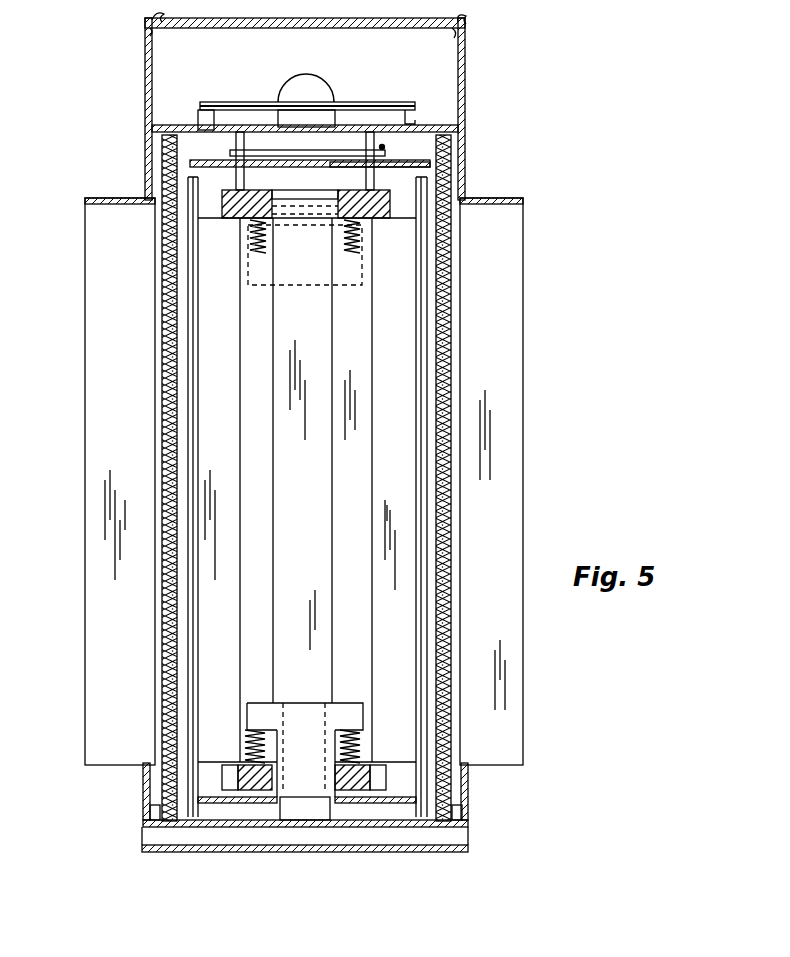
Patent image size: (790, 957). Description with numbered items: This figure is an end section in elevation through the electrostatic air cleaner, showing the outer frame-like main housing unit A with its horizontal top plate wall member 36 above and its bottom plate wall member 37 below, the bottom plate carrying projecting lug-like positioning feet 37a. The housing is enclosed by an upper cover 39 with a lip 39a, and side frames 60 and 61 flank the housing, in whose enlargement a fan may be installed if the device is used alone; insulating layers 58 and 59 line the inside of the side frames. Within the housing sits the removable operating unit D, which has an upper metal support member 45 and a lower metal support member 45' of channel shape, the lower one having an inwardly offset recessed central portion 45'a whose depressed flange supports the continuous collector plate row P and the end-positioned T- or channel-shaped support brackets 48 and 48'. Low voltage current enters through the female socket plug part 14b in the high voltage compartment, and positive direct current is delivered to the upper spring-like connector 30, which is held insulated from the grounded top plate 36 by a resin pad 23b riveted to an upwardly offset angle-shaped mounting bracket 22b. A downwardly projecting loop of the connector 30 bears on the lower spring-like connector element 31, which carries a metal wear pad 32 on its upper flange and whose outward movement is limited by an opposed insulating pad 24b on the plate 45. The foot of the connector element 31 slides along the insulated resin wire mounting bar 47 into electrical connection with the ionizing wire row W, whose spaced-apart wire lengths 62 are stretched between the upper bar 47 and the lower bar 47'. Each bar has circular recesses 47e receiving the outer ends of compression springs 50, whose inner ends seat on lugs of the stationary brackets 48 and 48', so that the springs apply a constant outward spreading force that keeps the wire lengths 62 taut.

The upper housing cover 39 is at (280, 36).
The cover lip 39a is at (455, 12).
The top plate wall member 36 is at (442, 128).
The female or socket plug part 14b is at (332, 68).
The mounting bracket 22b is at (346, 107).
The first spring-like connector 30 is at (262, 128).
The insulating or resin pad 23b is at (413, 124).
The top plate member / upper metal support member 45 is at (309, 150).
The insulating or resin pad 24b is at (397, 158).
The metal wear pad 32 is at (382, 147).
The second spring-like connector element 31 is at (240, 180).
The wire row mounting bar member 47 is at (307, 222).
The support bracket 48 is at (308, 264).
The compression spring 50 is at (362, 240).
The side frame 60 is at (84, 214).
The side frame 61 is at (523, 214).
The left insulation 58 is at (164, 340).
The right insulation 59 is at (452, 344).
The wire stretches or lengths 62 is at (240, 464).
The ionizing wire row W is at (372, 545).
The plate member assembly row P is at (387, 516).
The operating unit D is at (428, 608).
The support bracket 48' is at (305, 739).
The circular recess 47e is at (246, 768).
The wire row mounting bar member 47' is at (303, 829).
The bottom metal support member 45' is at (226, 845).
The recessed central portion 45'a is at (351, 845).
The bottom plate wall member 37 is at (372, 827).
The positioning feet 37a is at (430, 845).
The main housing unit A is at (468, 812).